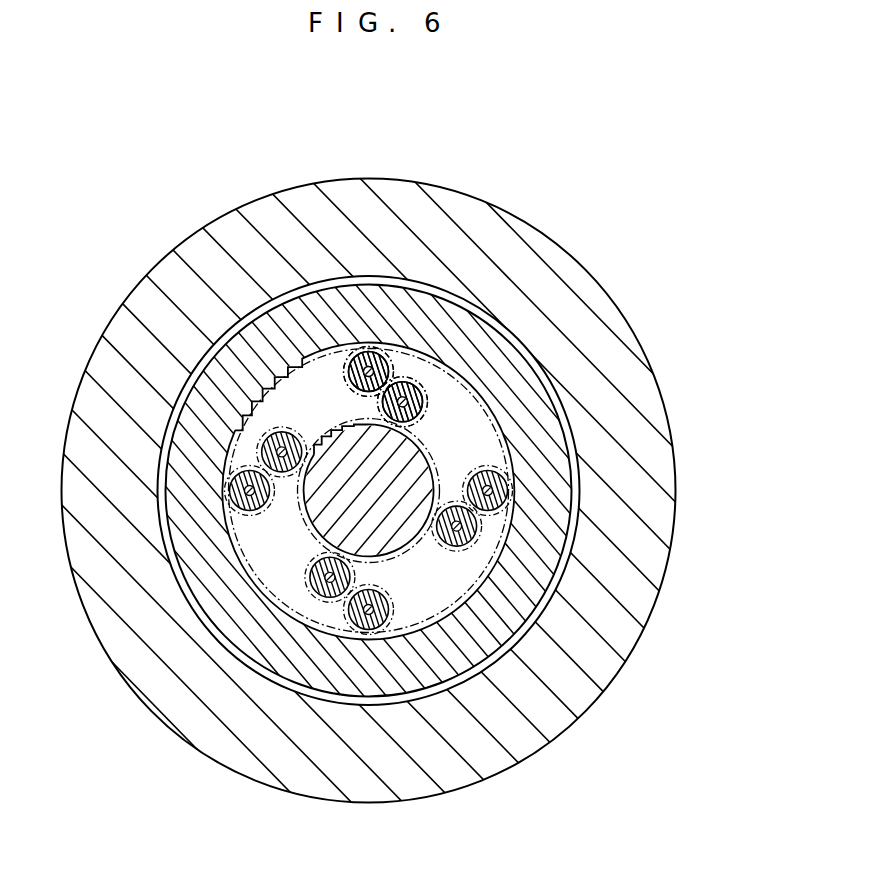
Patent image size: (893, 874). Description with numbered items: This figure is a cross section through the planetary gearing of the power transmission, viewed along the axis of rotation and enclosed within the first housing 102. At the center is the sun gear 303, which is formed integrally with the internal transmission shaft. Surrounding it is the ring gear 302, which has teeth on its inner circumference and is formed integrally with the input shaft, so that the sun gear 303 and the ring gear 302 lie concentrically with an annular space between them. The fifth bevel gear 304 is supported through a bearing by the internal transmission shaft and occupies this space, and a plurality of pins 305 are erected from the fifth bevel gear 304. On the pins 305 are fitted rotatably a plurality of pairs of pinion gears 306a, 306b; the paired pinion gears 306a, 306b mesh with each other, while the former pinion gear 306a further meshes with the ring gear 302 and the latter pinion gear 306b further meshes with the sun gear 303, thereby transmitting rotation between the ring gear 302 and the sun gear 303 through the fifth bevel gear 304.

The first housing 102 is at (147, 303).
The ring gear 302 is at (285, 330).
The sun gear 303 is at (423, 450).
The fifth bevel gear 304 is at (483, 443).
The pins 305 is at (423, 387).
The pinion gear 306a is at (353, 353).
The pinion gear 306b is at (425, 387).